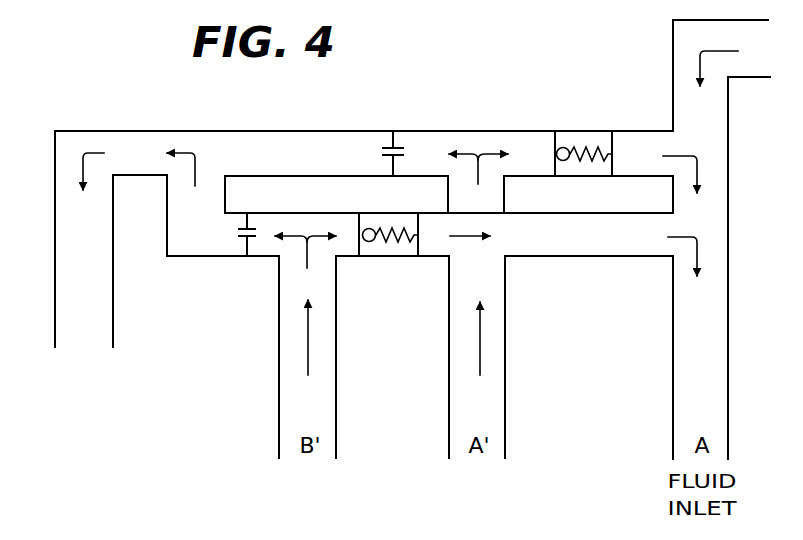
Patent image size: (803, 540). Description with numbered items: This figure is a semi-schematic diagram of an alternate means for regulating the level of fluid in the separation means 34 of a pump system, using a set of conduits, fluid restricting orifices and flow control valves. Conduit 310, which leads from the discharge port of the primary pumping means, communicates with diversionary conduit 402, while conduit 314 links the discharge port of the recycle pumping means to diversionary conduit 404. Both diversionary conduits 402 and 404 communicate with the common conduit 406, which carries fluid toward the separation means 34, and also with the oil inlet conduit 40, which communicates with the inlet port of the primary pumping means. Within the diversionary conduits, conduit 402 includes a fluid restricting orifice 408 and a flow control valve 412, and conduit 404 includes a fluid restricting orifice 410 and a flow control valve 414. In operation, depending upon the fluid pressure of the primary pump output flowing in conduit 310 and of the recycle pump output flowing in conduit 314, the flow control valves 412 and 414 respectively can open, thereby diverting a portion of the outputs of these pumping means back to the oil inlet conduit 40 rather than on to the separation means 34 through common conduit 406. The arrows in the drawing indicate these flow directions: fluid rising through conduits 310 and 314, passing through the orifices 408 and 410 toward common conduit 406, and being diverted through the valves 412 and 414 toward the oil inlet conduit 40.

The separation means 34 is at (102, 437).
The oil inlet conduit 40 is at (729, 104).
The conduit 310 is at (504, 358).
The conduit 314 is at (336, 326).
The diversionary conduit 402 is at (433, 138).
The diversionary conduit 404 is at (618, 257).
The common conduit 406 is at (150, 140).
The fluid restricting orifice 408 is at (392, 140).
The fluid restricting orifice 410 is at (248, 244).
The flow control valve 412 is at (597, 131).
The flow control valve 414 is at (400, 191).